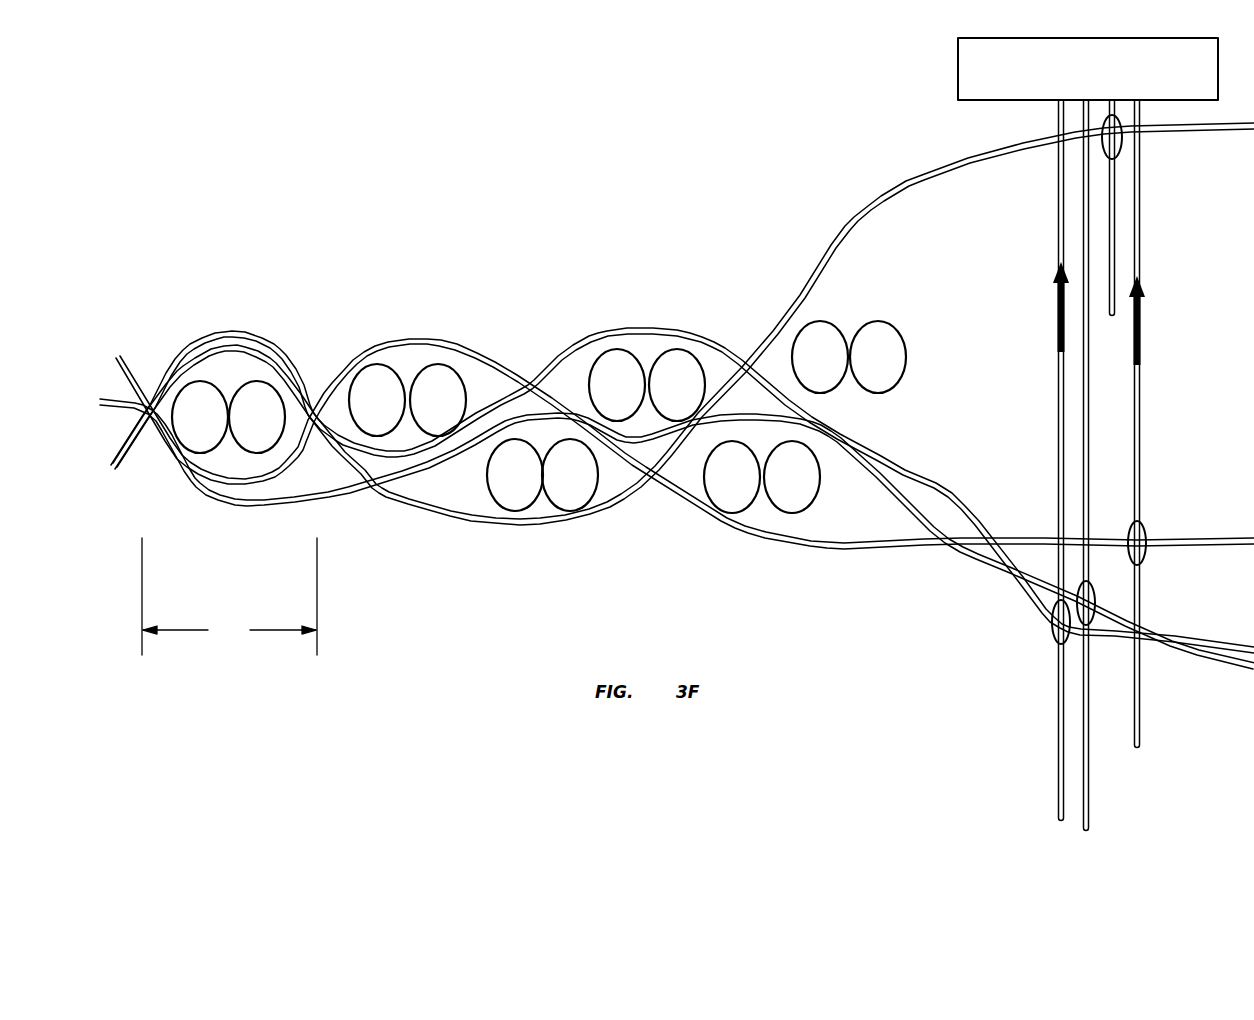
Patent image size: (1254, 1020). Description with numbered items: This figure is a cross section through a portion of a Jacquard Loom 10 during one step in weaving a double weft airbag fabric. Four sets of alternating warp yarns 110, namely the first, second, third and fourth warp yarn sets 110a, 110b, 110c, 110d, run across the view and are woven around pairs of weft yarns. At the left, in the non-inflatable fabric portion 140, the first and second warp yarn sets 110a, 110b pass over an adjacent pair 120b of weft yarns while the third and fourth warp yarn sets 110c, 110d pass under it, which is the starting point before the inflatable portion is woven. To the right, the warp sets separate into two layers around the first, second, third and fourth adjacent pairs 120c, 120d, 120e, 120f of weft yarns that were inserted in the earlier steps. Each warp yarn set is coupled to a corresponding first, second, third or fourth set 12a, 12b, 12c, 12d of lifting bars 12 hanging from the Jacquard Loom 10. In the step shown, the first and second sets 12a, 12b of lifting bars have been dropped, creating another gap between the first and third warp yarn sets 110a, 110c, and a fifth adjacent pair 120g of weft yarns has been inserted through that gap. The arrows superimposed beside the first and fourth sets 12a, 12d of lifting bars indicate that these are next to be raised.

The Jacquard Loom 10 is at (1197, 80).
The lifting bars 12 is at (1152, 825).
The first set of lifting bars 12a is at (1057, 183).
The second set of lifting bars 12b is at (1082, 225).
The third set of lifting bars 12c is at (1115, 177).
The fourth set of lifting bars 12d is at (1140, 224).
The warp yarns 110 is at (940, 573).
The first warp yarn set 110a is at (229, 330).
The second warp yarn set 110b is at (266, 358).
The third warp yarn set 110c is at (225, 478).
The fourth warp yarn set 110d is at (248, 500).
The adjacent pair of weft yarns 120b is at (250, 397).
The first adjacent pair of weft yarns 120c is at (434, 378).
The second adjacent pair of weft yarns 120d is at (567, 493).
The third adjacent pair of weft yarns 120e is at (682, 378).
The fourth adjacent pair of weft yarns 120f is at (793, 495).
The fifth adjacent pair of weft yarns 120g is at (827, 333).
The non-inflatable fabric portion 140 is at (229, 596).